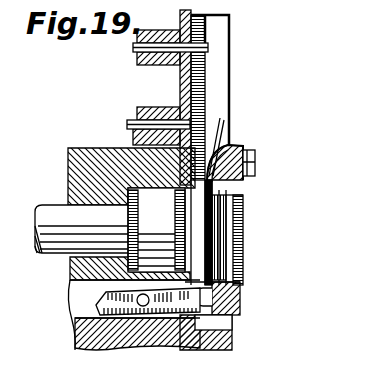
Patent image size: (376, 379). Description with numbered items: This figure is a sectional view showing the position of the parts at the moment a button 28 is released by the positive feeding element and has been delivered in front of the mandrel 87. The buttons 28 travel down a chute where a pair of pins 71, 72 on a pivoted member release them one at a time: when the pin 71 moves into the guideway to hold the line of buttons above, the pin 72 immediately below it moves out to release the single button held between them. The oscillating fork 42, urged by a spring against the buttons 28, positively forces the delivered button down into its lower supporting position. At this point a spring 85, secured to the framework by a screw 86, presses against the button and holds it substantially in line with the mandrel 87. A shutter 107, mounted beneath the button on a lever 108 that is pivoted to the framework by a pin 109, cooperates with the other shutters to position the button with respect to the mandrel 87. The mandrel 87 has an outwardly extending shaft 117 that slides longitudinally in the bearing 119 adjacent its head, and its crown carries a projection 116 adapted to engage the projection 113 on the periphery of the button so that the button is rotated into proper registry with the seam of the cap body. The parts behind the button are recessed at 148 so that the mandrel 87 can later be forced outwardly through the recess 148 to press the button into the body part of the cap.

The button 28 is at (202, 29).
The pin 71 is at (143, 60).
The pin 72 is at (138, 118).
The bearing 119 is at (80, 160).
The shaft 117 is at (45, 210).
The mandrel 87 is at (152, 244).
The oscillating fork 42 is at (228, 129).
The spring 85 is at (233, 146).
The screw 86 is at (256, 162).
The projection 113 is at (242, 198).
The recess 148 is at (236, 230).
The shutter 107 is at (242, 287).
The lever 108 is at (242, 303).
The pin 109 is at (137, 300).
The projection 116 is at (177, 285).